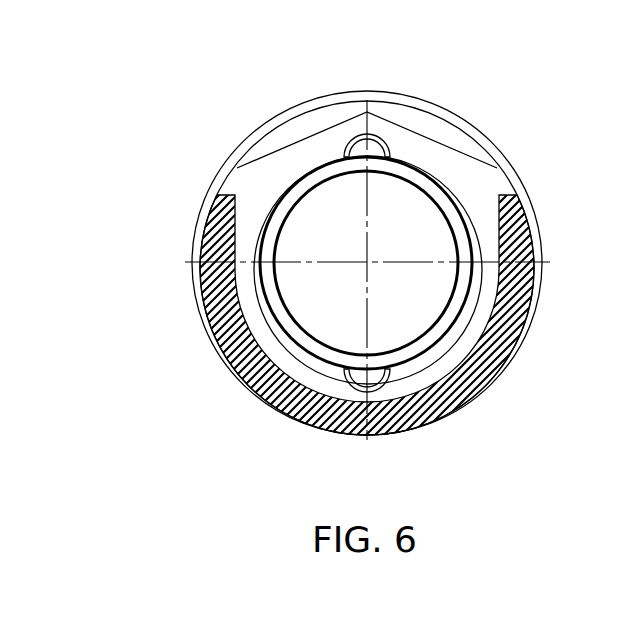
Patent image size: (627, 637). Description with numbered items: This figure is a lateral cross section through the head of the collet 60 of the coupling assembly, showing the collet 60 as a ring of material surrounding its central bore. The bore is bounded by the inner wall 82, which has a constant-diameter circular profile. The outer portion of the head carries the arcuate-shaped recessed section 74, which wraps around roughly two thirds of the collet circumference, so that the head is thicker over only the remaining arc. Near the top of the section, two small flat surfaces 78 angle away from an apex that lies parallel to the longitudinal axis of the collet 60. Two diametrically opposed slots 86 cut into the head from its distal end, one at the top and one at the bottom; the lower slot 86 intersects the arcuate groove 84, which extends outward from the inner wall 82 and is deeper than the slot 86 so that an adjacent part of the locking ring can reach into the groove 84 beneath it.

The collet 60 is at (557, 152).
The recessed section 74 is at (202, 294).
The flat surfaces 78 is at (285, 133).
The inner wall 82 is at (490, 323).
The arcuate groove 84 is at (327, 385).
The slots 86 is at (363, 140).